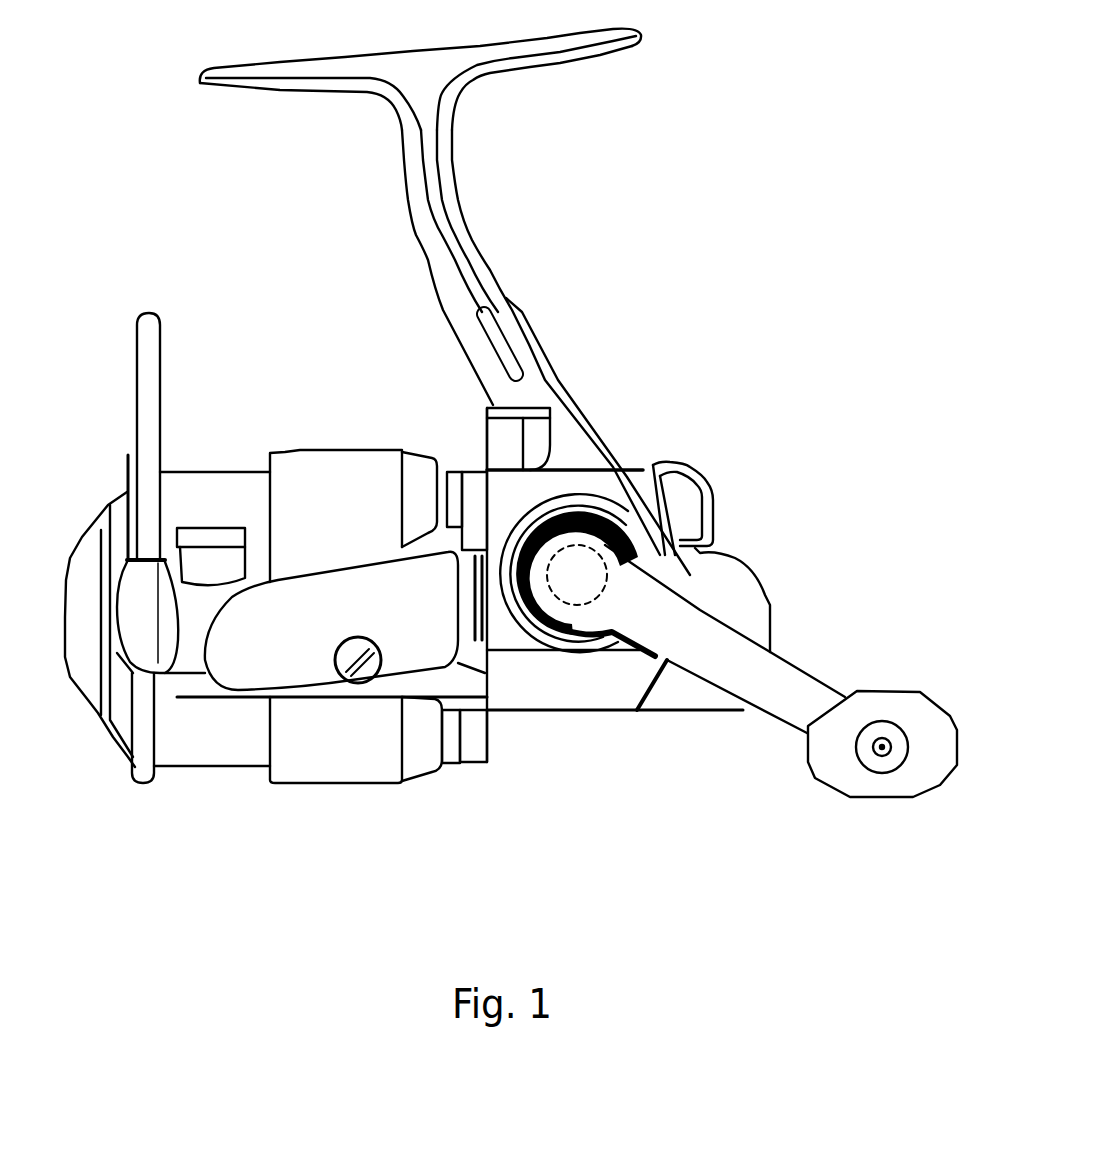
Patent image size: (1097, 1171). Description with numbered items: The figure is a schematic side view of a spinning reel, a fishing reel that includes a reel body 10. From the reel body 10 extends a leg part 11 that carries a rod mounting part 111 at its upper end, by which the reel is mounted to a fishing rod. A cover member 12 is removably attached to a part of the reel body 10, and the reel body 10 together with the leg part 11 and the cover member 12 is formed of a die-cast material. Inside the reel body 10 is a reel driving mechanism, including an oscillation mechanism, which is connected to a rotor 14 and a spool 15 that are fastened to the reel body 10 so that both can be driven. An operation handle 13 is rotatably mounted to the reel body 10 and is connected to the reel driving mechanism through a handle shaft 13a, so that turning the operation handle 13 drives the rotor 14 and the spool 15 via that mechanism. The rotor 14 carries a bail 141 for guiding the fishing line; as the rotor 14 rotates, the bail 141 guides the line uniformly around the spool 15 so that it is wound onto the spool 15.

The reel body 10 is at (752, 593).
The leg part 11 is at (560, 388).
The rod mounting part 111 is at (603, 50).
The cover member 12 is at (607, 488).
The operation handle 13 is at (765, 692).
The handle shaft 13a is at (712, 475).
The rotor 14 is at (477, 755).
The bail 141 is at (150, 372).
The spool 15 is at (320, 768).